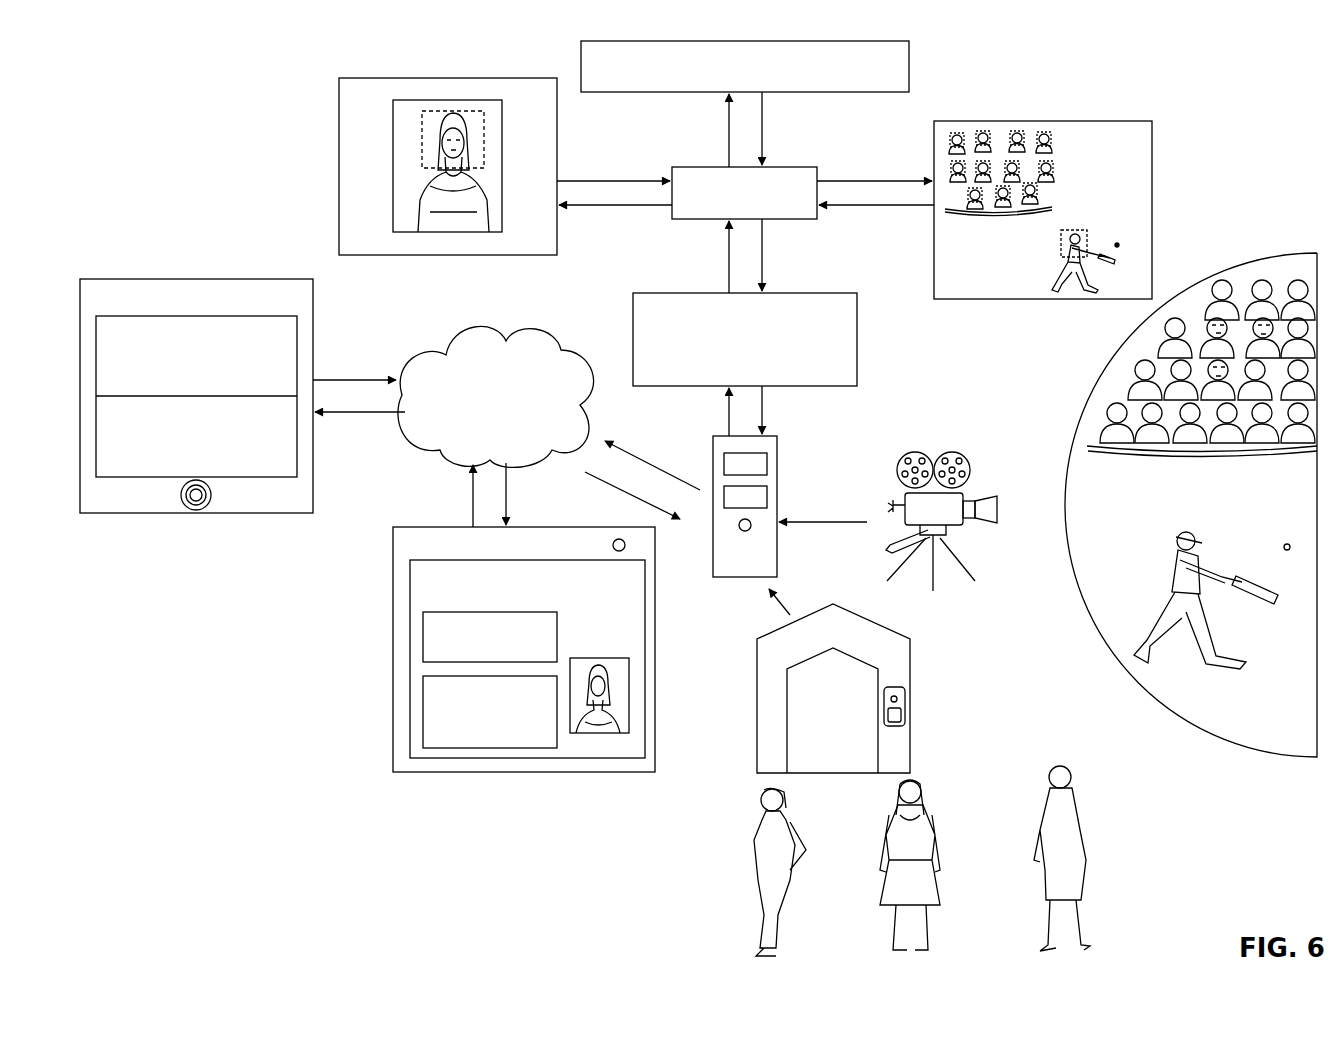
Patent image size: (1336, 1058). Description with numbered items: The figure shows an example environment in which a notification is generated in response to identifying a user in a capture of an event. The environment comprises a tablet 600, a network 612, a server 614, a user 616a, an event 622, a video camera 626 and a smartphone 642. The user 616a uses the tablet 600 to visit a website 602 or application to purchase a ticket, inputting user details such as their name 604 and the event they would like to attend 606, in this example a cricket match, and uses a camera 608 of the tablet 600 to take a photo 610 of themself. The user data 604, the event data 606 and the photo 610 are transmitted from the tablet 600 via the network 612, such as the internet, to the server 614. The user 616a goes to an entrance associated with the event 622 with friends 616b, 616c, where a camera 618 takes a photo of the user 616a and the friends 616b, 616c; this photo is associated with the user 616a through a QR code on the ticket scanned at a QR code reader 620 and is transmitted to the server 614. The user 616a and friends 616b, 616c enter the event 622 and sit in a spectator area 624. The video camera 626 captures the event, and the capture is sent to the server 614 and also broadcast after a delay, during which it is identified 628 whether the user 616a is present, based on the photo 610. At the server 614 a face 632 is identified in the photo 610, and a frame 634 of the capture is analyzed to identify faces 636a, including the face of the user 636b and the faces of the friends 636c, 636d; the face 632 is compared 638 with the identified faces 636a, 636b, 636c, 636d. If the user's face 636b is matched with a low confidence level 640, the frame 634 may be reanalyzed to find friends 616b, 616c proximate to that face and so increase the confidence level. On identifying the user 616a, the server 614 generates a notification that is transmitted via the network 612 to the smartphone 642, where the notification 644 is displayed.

The tablet 600 is at (518, 632).
The website 602 is at (478, 654).
The name 604 is at (423, 637).
The event 606 is at (423, 710).
The camera 608 is at (619, 551).
The photo 610 is at (450, 408).
The network 612 is at (455, 333).
The server 614 is at (713, 445).
The user 616a is at (935, 858).
The friend 616b is at (785, 870).
The friend 616c is at (1080, 826).
The camera 618 is at (897, 699).
The QR code reader 620 is at (905, 716).
The event 622 is at (1128, 583).
The spectator area 624 is at (1237, 320).
The video camera 626 is at (905, 505).
The identifying step 628 is at (700, 293).
The face 632 is at (423, 125).
The frame 634 is at (1085, 167).
The face 636a is at (1044, 132).
The face of the user 636b is at (1003, 160).
The face of friend 636c is at (983, 161).
The face of friend 636d is at (1055, 163).
The compare step 638 is at (720, 167).
The low confidence level 640 is at (909, 66).
The smartphone 642 is at (196, 379).
The notification 644 is at (165, 316).